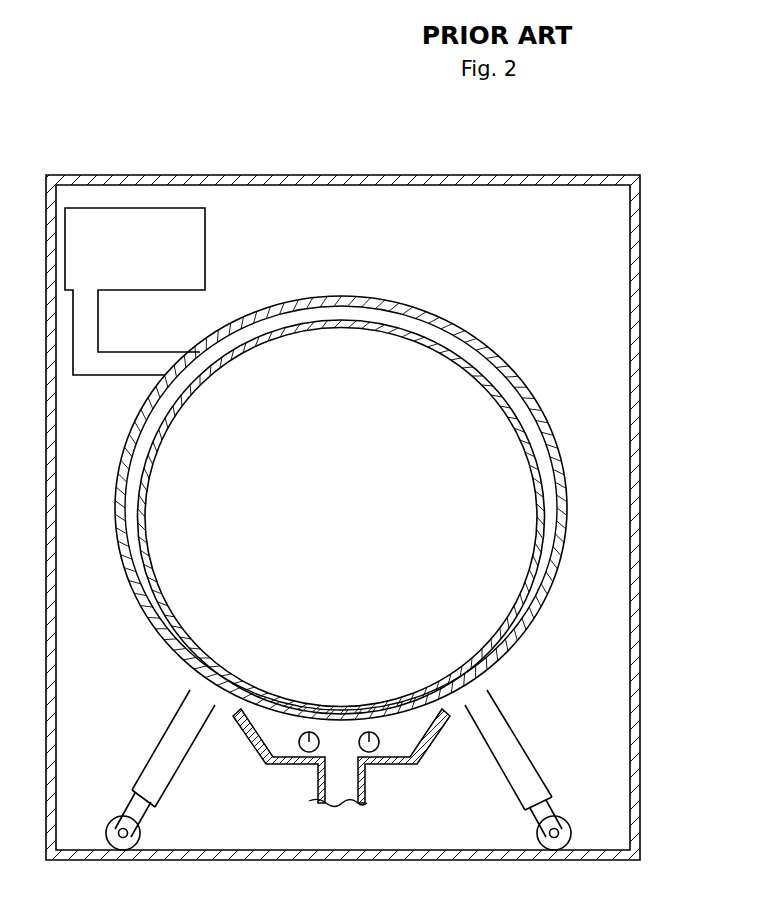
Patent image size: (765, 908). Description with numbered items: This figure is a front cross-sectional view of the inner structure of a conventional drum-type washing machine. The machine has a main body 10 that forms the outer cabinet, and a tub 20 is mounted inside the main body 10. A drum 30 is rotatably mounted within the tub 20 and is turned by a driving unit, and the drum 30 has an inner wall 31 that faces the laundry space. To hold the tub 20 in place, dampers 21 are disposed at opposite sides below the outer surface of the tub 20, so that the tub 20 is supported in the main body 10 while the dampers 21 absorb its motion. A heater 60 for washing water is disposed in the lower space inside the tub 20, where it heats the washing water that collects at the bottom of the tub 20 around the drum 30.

The main body 10 is at (434, 173).
The tub 20 is at (533, 395).
The drum 30 is at (543, 480).
The drum inner wall 31 is at (543, 518).
The dampers 21 is at (510, 752).
The heater for washing water 60 is at (369, 732).